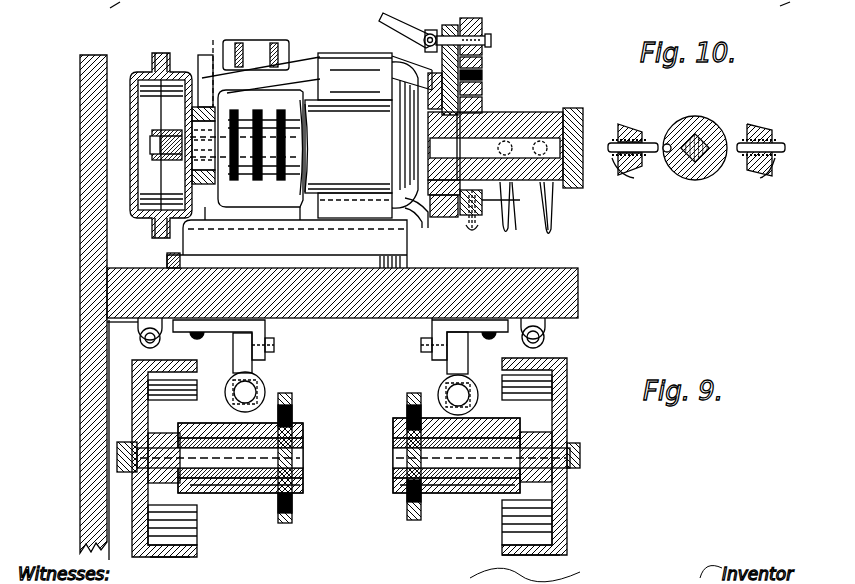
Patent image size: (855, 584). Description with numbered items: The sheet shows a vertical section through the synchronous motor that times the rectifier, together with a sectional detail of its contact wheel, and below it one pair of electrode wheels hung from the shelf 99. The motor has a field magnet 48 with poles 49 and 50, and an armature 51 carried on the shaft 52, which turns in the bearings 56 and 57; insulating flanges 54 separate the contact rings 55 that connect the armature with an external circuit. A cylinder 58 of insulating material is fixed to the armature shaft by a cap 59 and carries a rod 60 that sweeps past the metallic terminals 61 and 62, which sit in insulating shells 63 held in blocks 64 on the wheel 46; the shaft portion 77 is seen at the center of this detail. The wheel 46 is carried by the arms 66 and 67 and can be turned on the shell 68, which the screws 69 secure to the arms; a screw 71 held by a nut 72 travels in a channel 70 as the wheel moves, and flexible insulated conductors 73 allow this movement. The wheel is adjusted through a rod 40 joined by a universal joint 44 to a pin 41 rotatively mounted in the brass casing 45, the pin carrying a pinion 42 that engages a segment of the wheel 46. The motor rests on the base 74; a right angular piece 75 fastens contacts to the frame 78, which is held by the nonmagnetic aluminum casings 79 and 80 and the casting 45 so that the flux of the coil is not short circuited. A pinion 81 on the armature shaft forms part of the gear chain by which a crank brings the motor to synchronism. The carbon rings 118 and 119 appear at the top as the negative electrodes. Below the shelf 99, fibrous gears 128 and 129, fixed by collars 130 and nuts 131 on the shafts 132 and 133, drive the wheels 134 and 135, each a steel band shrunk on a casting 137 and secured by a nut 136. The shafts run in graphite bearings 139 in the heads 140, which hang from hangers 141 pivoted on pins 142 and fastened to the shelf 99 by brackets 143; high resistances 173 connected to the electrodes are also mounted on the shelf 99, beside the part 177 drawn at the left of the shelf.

In FIG. 9, the carbon ring 118 is at (114, 16).
In FIG. 9, the carbon ring 119 is at (802, 7).
In FIG. 9, the rod 40 is at (398, 20).
In FIG. 9, the pin 41 is at (491, 40).
In FIG. 9, the pinion 42 is at (483, 35).
In FIG. 9, the universal joint 44 is at (431, 32).
In FIG. 9, the casing 45 is at (452, 25).
In FIG. 9, the wheel 46 is at (482, 78).
In FIG. 9, the field magnet 48 is at (302, 204).
In FIG. 9, the pole 49 is at (338, 53).
In FIG. 9, the pole 50 is at (325, 226).
In FIG. 9, the armature 51 is at (362, 112).
In FIG. 9, the shaft 52 is at (323, 150).
In FIG. 9, the insulating flange 54 is at (278, 113).
In FIG. 9, the contact ring 55 is at (248, 170).
In FIG. 9, the bearing 56 is at (200, 100).
In FIG. 9, the bearing 57 is at (530, 118).
In FIG. 9, the cylinder 58 is at (547, 112).
In FIG. 10, the cylinder 58 is at (716, 126).
In FIG. 9, the cap 59 is at (577, 122).
In FIG. 10, the rod 60 is at (663, 145).
In FIG. 10, the terminal 61 is at (657, 156).
In FIG. 10, the terminal 62 is at (737, 155).
In FIG. 10, the insulating shell 63 is at (640, 166).
In FIG. 10, the block 64 is at (620, 162).
In FIG. 9, the arm 66 is at (410, 72).
In FIG. 9, the arm 67 is at (427, 222).
In FIG. 9, the shell 68 is at (478, 216).
In FIG. 9, the screw 69 is at (482, 64).
In FIG. 9, the channel 70 is at (482, 96).
In FIG. 9, the screw 71 is at (510, 203).
In FIG. 9, the nut 72 is at (471, 232).
In FIG. 9, the flexible insulated conductor 73 is at (522, 232).
In FIG. 9, the base 74 is at (168, 250).
In FIG. 9, the right angular piece 75 is at (252, 47).
In FIG. 10, the square shaft portion 77 is at (694, 130).
In FIG. 9, the frame 78 is at (215, 78).
In FIG. 9, the aluminum casing 79 is at (197, 210).
In FIG. 9, the aluminum casing 80 is at (130, 185).
In FIG. 9, the pinion 81 is at (174, 138).
In FIG. 9, the shelf 99 is at (578, 295).
In FIG. 9, the gear 128 is at (290, 424).
In FIG. 9, the gear 129 is at (407, 400).
In FIG. 9, the collar 130 is at (303, 497).
In FIG. 9, the nut 131 is at (277, 500).
In FIG. 9, the shaft 132 is at (212, 490).
In FIG. 9, the shaft 133 is at (520, 488).
In FIG. 9, the wheel 134 is at (190, 556).
In FIG. 9, the wheel 135 is at (565, 552).
In FIG. 9, the nut 136 is at (117, 458).
In FIG. 9, the casting 137 is at (560, 385).
In FIG. 9, the graphite bearing 139 is at (262, 398).
In FIG. 9, the head 140 is at (208, 428).
In FIG. 9, the hanger 141 is at (255, 356).
In FIG. 9, the pin 142 is at (276, 345).
In FIG. 9, the bracket 143 is at (266, 326).
In FIG. 9, the high resistance 173 is at (140, 340).
In FIG. 9, the roller track 177 is at (107, 322).